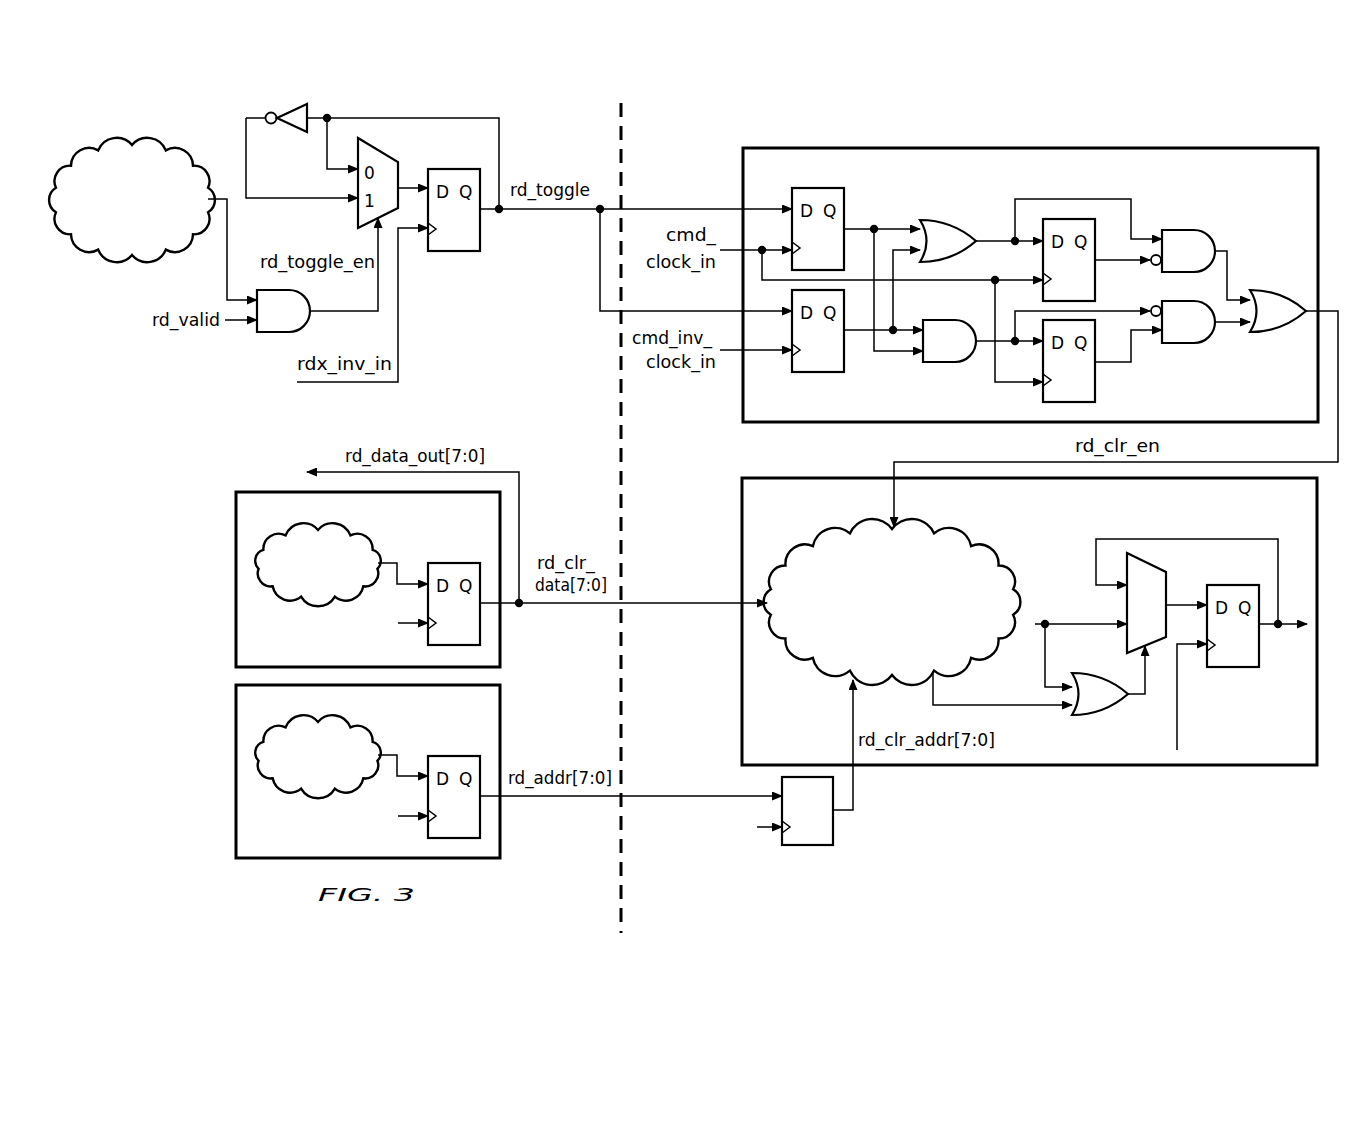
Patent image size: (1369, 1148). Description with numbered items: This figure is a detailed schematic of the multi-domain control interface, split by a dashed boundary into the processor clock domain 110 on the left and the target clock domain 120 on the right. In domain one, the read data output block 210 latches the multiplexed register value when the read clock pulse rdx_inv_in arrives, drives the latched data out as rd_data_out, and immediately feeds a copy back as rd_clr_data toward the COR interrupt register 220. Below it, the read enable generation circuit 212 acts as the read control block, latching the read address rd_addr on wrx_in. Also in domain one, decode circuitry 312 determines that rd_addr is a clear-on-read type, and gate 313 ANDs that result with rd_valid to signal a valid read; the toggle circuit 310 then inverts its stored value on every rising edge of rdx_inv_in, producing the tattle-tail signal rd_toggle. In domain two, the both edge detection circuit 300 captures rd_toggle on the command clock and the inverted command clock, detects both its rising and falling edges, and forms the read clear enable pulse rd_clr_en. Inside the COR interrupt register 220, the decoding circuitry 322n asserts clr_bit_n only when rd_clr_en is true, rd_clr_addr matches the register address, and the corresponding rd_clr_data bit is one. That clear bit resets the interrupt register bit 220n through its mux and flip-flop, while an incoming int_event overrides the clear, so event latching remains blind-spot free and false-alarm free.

The both edge detection circuit 300 is at (1236, 144).
The toggle circuit 310 is at (455, 252).
The decode circuitry 312 is at (114, 143).
The gate 313 is at (275, 333).
The read data output block 210 is at (234, 605).
The read enable generation circuit 212 is at (234, 797).
The COR interrupt register 220 is at (1029, 651).
The interrupt register bit 220n is at (1233, 667).
The decoding circuitry 322n is at (803, 664).
The processor clock domain 110 is at (600, 918).
The target clock domain 120 is at (677, 918).